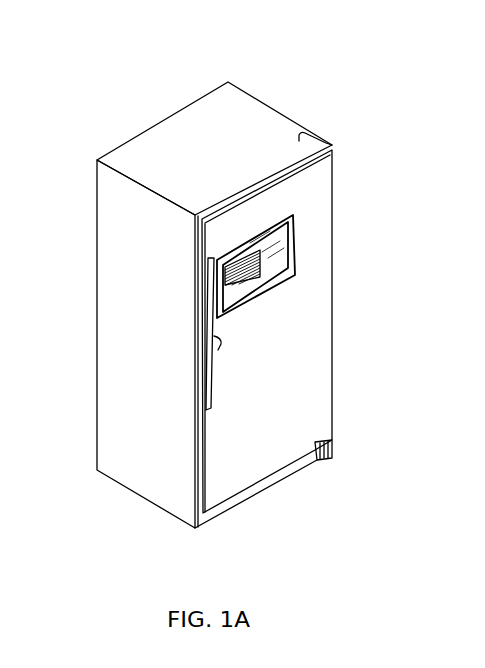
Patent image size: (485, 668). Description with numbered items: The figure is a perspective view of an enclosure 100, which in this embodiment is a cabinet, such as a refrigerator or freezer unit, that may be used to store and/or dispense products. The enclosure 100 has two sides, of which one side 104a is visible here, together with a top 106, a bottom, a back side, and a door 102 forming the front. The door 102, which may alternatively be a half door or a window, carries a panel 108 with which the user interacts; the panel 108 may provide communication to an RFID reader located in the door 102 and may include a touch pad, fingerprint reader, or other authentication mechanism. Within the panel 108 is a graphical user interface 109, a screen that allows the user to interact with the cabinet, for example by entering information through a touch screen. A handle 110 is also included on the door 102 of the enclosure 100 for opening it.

The enclosure 100 is at (236, 269).
The door 102 is at (278, 407).
The side 104a is at (122, 247).
The top 106 is at (177, 131).
The panel 108 is at (298, 249).
The graphical user interface 109 is at (262, 274).
The handle 110 is at (220, 342).